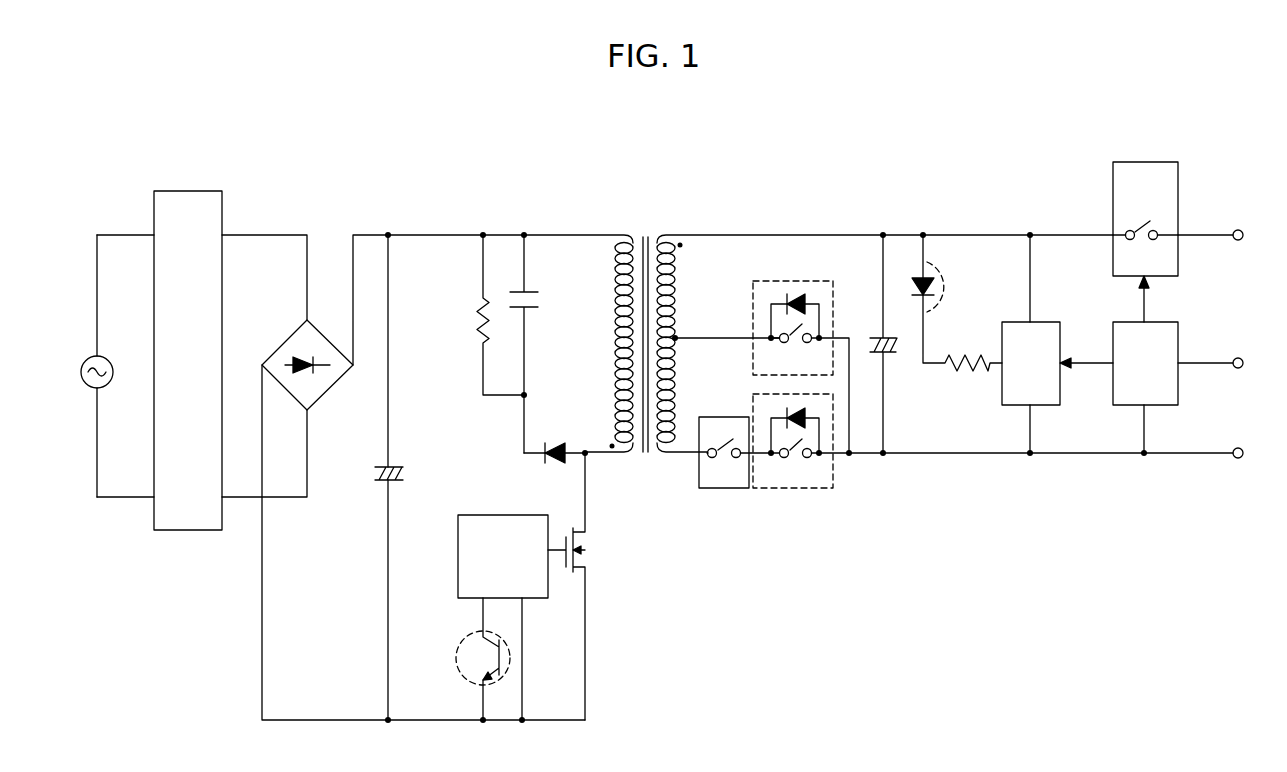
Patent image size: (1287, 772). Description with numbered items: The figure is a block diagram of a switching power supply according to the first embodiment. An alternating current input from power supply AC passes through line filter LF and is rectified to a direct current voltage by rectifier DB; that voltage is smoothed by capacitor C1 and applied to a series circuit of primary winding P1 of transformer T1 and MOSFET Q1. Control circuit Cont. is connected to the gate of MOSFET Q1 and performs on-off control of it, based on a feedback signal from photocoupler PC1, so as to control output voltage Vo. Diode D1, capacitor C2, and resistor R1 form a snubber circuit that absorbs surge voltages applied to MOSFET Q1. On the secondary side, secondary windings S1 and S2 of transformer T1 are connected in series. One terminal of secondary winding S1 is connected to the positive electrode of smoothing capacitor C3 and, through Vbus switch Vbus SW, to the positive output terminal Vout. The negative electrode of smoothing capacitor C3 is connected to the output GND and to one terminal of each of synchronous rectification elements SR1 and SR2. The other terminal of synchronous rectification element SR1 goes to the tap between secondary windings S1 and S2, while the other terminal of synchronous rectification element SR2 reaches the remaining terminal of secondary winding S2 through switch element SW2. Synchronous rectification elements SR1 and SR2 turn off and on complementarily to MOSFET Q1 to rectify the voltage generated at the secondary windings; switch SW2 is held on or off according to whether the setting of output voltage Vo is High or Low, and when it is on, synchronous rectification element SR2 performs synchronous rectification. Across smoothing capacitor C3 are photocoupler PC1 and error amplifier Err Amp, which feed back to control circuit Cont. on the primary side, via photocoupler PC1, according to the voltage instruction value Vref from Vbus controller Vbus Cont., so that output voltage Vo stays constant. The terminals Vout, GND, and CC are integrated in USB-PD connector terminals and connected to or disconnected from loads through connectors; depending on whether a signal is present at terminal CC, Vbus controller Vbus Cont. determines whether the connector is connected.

The power supply AC is at (107, 366).
The line filter LF is at (188, 360).
The rectifier DB is at (305, 356).
The capacitor C1 is at (376, 477).
The resistor R1 is at (482, 315).
The capacitor C2 is at (540, 342).
The diode D1 is at (556, 439).
The transformer T1 is at (678, 328).
The primary winding P1 is at (605, 346).
The secondary winding S1 is at (684, 290).
The secondary winding S2 is at (718, 389).
The MOSFET Q1 is at (585, 586).
The control circuit Cont. is at (503, 619).
The photocoupler PC1 is at (710, 477).
The switch element SW2 is at (723, 471).
The synchronous rectification element SR1 is at (802, 352).
The synchronous rectification element SR2 is at (793, 459).
The smoothing capacitor C3 is at (875, 344).
The error amplifier Err Amp is at (1031, 344).
The voltage instruction value Vref is at (1086, 352).
The Vbus switch Vbus SW is at (1145, 219).
The Vbus controller Vbus Cont. is at (1145, 366).
The output voltage Vo is at (1069, 233).
The output positive electrode terminal Vout is at (1244, 222).
The cc terminal CC is at (1218, 348).
The GND of the output GND is at (1245, 441).